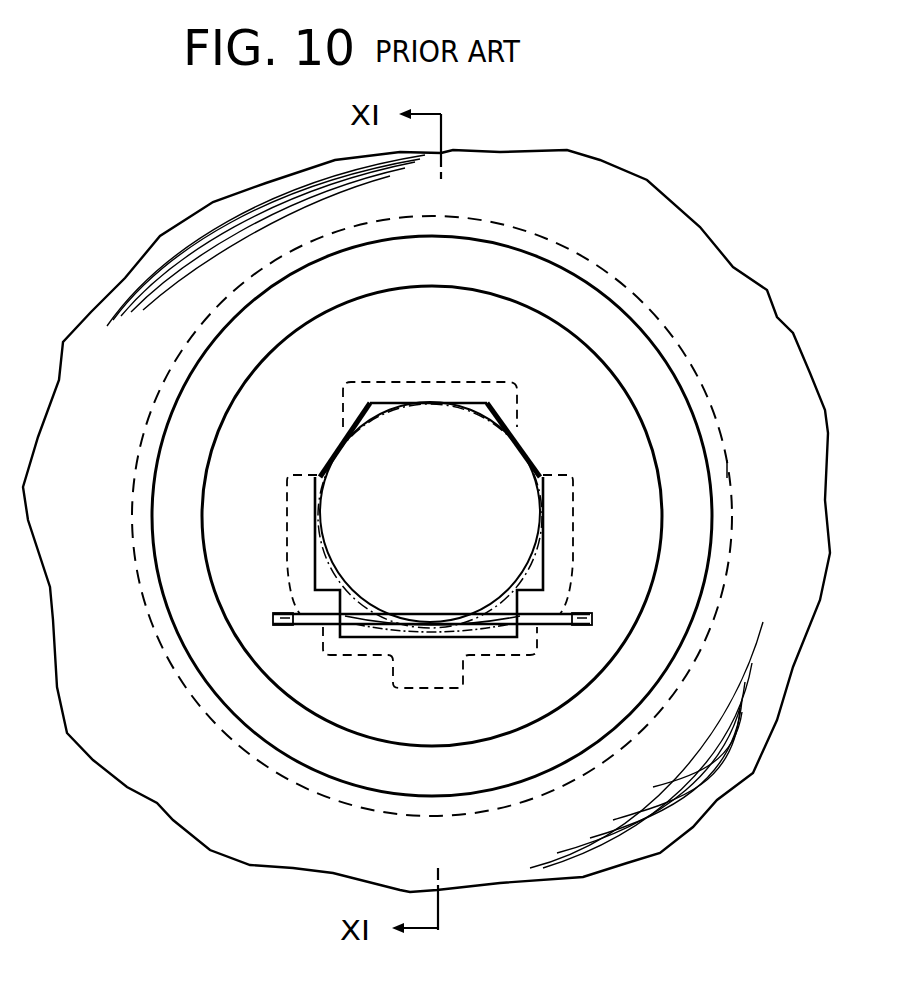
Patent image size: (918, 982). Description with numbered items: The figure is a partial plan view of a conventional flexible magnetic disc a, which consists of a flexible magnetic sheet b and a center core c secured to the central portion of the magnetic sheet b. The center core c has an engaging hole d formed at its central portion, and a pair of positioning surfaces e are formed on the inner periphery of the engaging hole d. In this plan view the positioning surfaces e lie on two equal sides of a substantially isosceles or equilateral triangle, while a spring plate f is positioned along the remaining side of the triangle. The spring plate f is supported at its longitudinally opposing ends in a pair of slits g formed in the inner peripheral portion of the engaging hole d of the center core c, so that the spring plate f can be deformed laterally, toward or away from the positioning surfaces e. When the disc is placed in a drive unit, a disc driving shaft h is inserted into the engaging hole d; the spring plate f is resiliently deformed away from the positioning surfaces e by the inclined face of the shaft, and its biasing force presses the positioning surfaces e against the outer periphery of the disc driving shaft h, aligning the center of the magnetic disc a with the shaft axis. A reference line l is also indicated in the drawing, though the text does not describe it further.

The flexible magnetic disc a is at (791, 235).
The flexible magnetic sheet b is at (793, 333).
The center core c is at (545, 258).
The reference line l is at (730, 470).
The engaging hole d is at (447, 400).
The positioning surfaces e is at (343, 448).
The spring plate f is at (447, 614).
The slits g is at (268, 628).
The disc driving shaft h is at (513, 402).